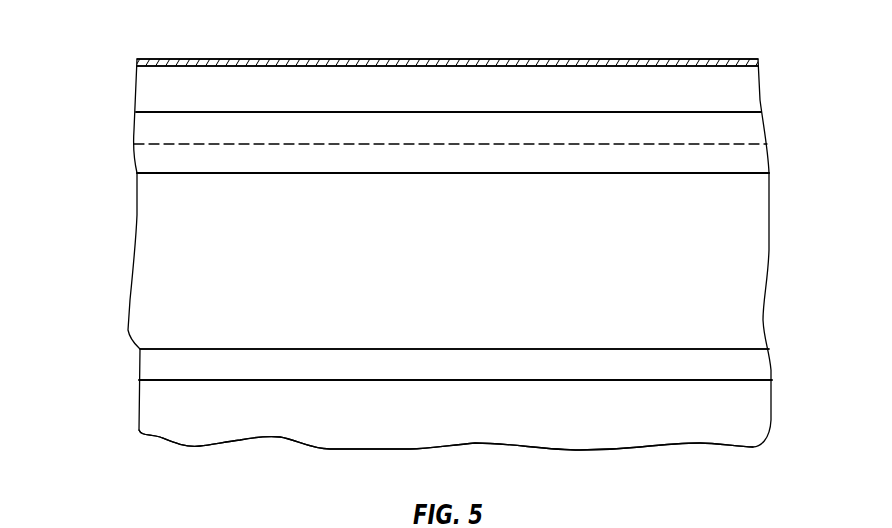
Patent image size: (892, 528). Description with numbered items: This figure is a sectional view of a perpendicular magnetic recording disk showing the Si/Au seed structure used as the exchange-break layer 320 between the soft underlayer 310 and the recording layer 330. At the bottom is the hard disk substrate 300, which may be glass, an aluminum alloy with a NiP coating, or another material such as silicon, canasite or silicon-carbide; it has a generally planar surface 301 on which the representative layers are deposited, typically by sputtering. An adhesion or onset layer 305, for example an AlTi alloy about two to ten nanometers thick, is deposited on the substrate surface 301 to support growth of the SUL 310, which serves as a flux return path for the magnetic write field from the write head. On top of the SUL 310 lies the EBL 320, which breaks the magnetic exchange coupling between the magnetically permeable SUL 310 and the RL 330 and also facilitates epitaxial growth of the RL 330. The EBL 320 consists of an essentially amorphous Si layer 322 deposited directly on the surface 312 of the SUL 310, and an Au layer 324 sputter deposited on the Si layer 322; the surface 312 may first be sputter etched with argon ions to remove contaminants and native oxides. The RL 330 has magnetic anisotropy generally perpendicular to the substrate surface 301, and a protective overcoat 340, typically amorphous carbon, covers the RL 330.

The hard disk substrate 300 is at (760, 417).
The planar surface 301 is at (755, 381).
The onset layer 305 is at (760, 363).
The soft underlayer 310 is at (757, 265).
The surface of SUL 312 is at (754, 173).
The exchange-break layer 320 is at (130, 113).
The Si layer 322 is at (762, 163).
The Au layer 324 is at (752, 128).
The recording layer 330 is at (748, 90).
The protective overcoat 340 is at (585, 58).